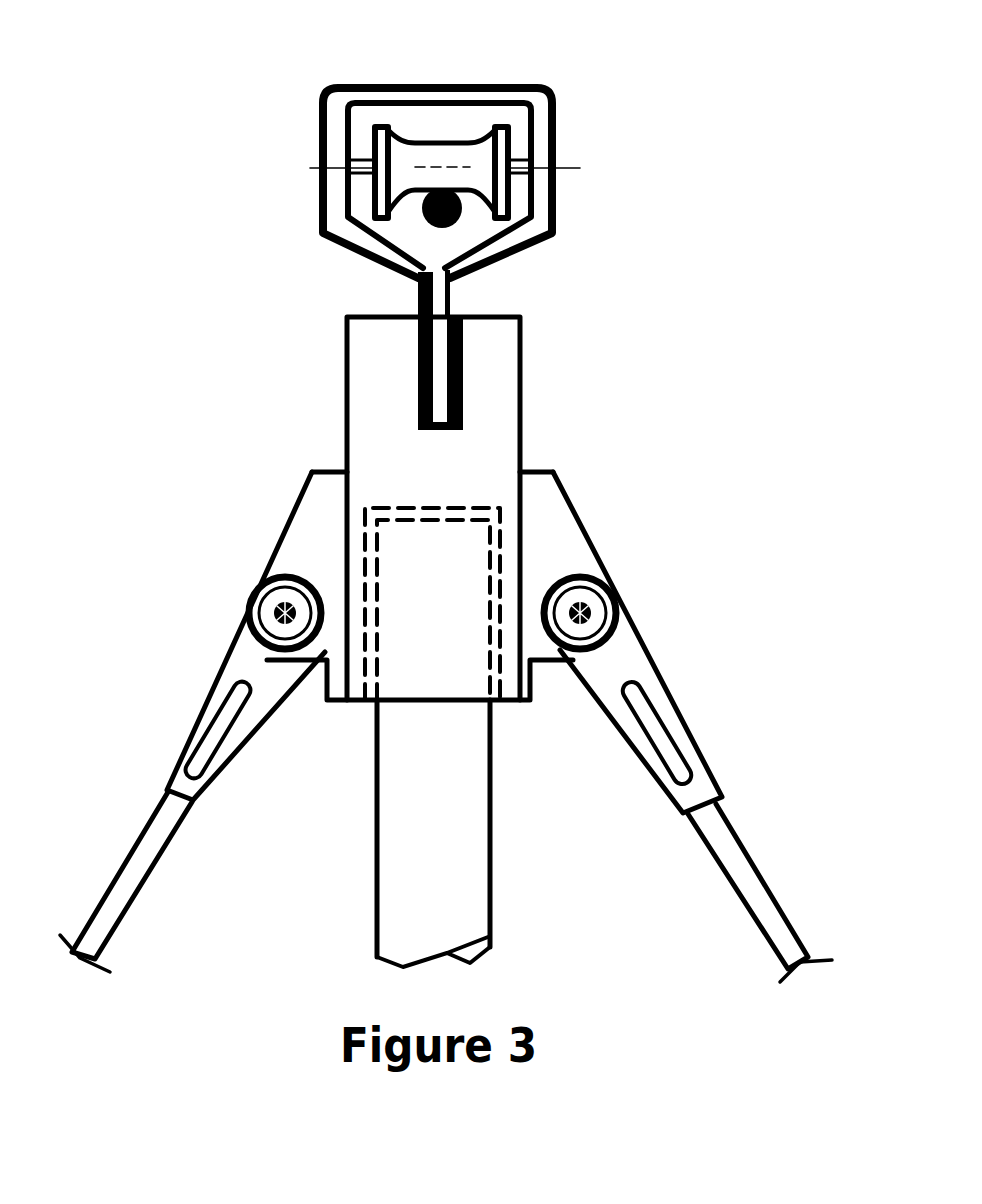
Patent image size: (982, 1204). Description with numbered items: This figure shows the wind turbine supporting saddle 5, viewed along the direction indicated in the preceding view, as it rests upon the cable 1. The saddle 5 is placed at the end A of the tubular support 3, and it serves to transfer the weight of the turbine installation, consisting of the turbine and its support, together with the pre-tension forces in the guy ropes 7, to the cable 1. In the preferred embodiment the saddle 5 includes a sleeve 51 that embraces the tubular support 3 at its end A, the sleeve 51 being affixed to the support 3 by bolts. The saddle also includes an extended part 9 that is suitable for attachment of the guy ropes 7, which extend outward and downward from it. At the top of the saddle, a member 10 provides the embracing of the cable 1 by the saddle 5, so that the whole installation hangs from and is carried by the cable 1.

The cable 1 is at (460, 220).
The support 3 is at (447, 853).
The saddle 5 is at (530, 82).
The guy ropes 7 is at (770, 917).
The extended part 9 is at (553, 547).
The member 10 is at (372, 157).
The sleeve 51 is at (380, 400).
The end of support A is at (300, 503).